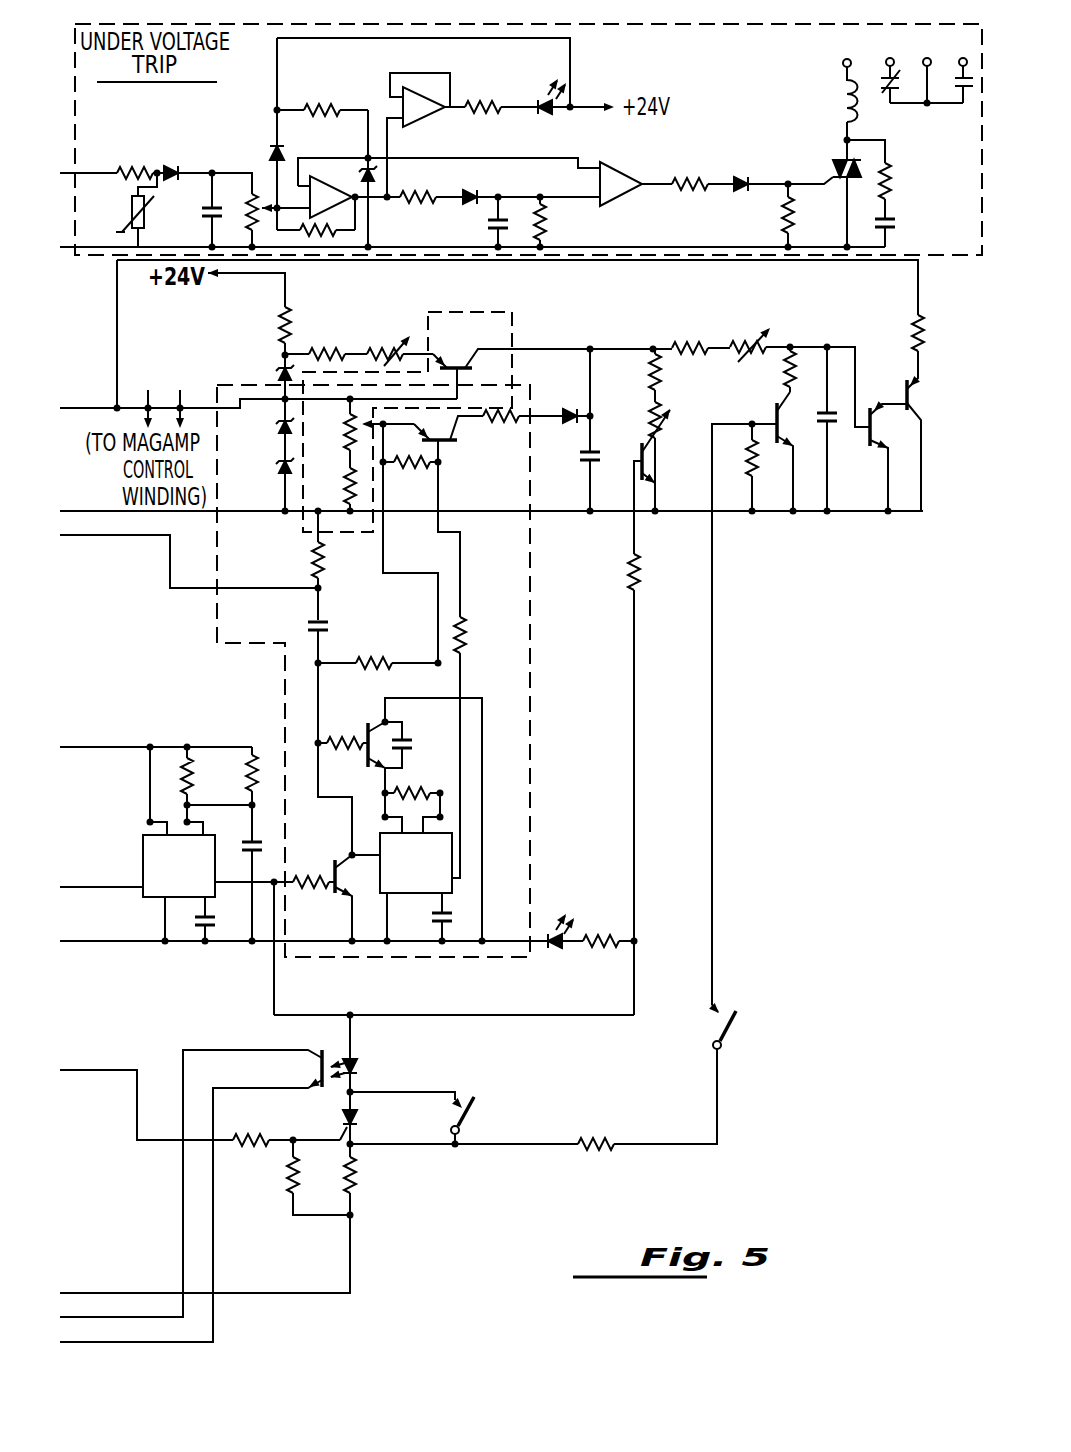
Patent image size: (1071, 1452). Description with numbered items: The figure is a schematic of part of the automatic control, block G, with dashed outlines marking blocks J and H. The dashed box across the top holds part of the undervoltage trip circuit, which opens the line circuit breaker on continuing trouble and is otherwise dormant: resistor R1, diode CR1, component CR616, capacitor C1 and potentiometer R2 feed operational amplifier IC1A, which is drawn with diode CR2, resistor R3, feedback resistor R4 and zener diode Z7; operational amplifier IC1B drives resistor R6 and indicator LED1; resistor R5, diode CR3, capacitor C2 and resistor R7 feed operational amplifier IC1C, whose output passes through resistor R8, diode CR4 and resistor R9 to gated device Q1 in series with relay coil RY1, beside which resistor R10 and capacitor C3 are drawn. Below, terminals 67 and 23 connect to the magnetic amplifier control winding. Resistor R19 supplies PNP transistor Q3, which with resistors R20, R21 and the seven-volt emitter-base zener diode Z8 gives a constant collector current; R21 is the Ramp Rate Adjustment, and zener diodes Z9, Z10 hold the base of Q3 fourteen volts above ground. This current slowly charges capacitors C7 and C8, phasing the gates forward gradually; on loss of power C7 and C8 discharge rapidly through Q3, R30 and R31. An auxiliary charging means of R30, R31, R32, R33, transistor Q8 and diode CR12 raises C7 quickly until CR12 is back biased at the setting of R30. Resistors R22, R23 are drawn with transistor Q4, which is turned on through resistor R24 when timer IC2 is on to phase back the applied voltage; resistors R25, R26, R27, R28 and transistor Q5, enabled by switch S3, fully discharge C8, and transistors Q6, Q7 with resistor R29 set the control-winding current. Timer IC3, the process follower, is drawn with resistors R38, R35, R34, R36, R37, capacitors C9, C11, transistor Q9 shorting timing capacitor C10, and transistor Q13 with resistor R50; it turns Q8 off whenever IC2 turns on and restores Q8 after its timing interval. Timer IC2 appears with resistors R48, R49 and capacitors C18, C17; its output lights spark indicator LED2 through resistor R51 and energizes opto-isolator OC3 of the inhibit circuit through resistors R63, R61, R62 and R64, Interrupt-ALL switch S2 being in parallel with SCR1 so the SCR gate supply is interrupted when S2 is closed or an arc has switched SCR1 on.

The resistor R1 is at (118, 170).
The diode CR1 is at (170, 170).
The varistor CR616 is at (132, 213).
The capacitor C1 is at (200, 216).
The potentiometer R2 is at (250, 207).
The diode CR2 is at (273, 150).
The resistor R3 is at (326, 103).
The operational amplifier IC1A is at (313, 173).
The resistor R4 is at (325, 243).
The zener diode Z7 is at (376, 168).
The operational amplifier IC1B is at (383, 100).
The resistor R6 is at (490, 103).
The light emitting diode LED1 is at (540, 98).
The resistor R5 is at (433, 195).
The diode CR3 is at (472, 192).
The capacitor C2 is at (487, 231).
The resistor R7 is at (548, 226).
The operational amplifier IC1C is at (625, 198).
The resistor R8 is at (683, 175).
The diode CR4 is at (741, 175).
The resistor R9 is at (782, 217).
The triac Q1 is at (838, 158).
The relay RY1 is at (843, 98).
The resistor R10 is at (894, 186).
The capacitor C3 is at (894, 224).
The terminal 67 is at (146, 395).
The terminal 23 is at (181, 395).
The resistor R19 is at (280, 337).
The emitter-base zener diode Z8 is at (278, 372).
The zener diode Z9 is at (278, 428).
The zener diode Z10 is at (278, 467).
The resistor R20 is at (326, 334).
The Ramp Rate Adjustment resistor R21 is at (386, 348).
The PNP transistor Q3 is at (455, 362).
The block J is at (513, 323).
The block H is at (538, 660).
The Automatic Control G is at (778, 793).
The adjustable resistor R30 is at (345, 430).
The resistor R31 is at (345, 484).
The transistor Q8 is at (456, 446).
The resistor R32 is at (417, 470).
The resistor R33 is at (503, 428).
The diode CR12 is at (567, 405).
The capacitor C7 is at (588, 462).
The resistor R22 is at (648, 375).
The potentiometer R23 is at (648, 420).
The transistor Q4 is at (653, 466).
The resistor R24 is at (640, 573).
The resistor R25 is at (680, 340).
The potentiometer R26 is at (735, 340).
The resistor R27 is at (782, 372).
The transistor Q5 is at (787, 443).
The resistor R28 is at (748, 462).
The capacitor C8 is at (830, 430).
The transistor Q6 is at (885, 446).
The transistor Q7 is at (914, 403).
The resistor R29 is at (915, 325).
The resistor R38 is at (312, 562).
The capacitor C9 is at (308, 626).
The resistor R35 is at (376, 650).
The resistor R34 is at (466, 622).
The resistor R36 is at (348, 730).
The transistor Q9 is at (365, 765).
The timing capacitor C10 is at (406, 740).
The resistor R37 is at (413, 790).
The timer IC3 is at (455, 878).
The capacitor C11 is at (430, 920).
The transistor Q13 is at (330, 900).
The resistor R50 is at (312, 870).
The timer IC2 is at (140, 856).
The resistor R48 is at (232, 776).
The resistor R49 is at (250, 762).
The capacitor C18 is at (246, 845).
The capacitor C17 is at (213, 918).
The light emitting diode LED2 is at (553, 928).
The resistor R51 is at (600, 950).
The opto-isolator OC3 is at (362, 1066).
The silicon controlled rectifier SCR1 is at (360, 1117).
The resistor R63 is at (362, 1175).
The resistor R61 is at (255, 1152).
The resistor R62 is at (280, 1195).
The Interrupt-ALL switch S2 is at (478, 1096).
The resistor R64 is at (600, 1130).
The switch S3 is at (740, 1020).